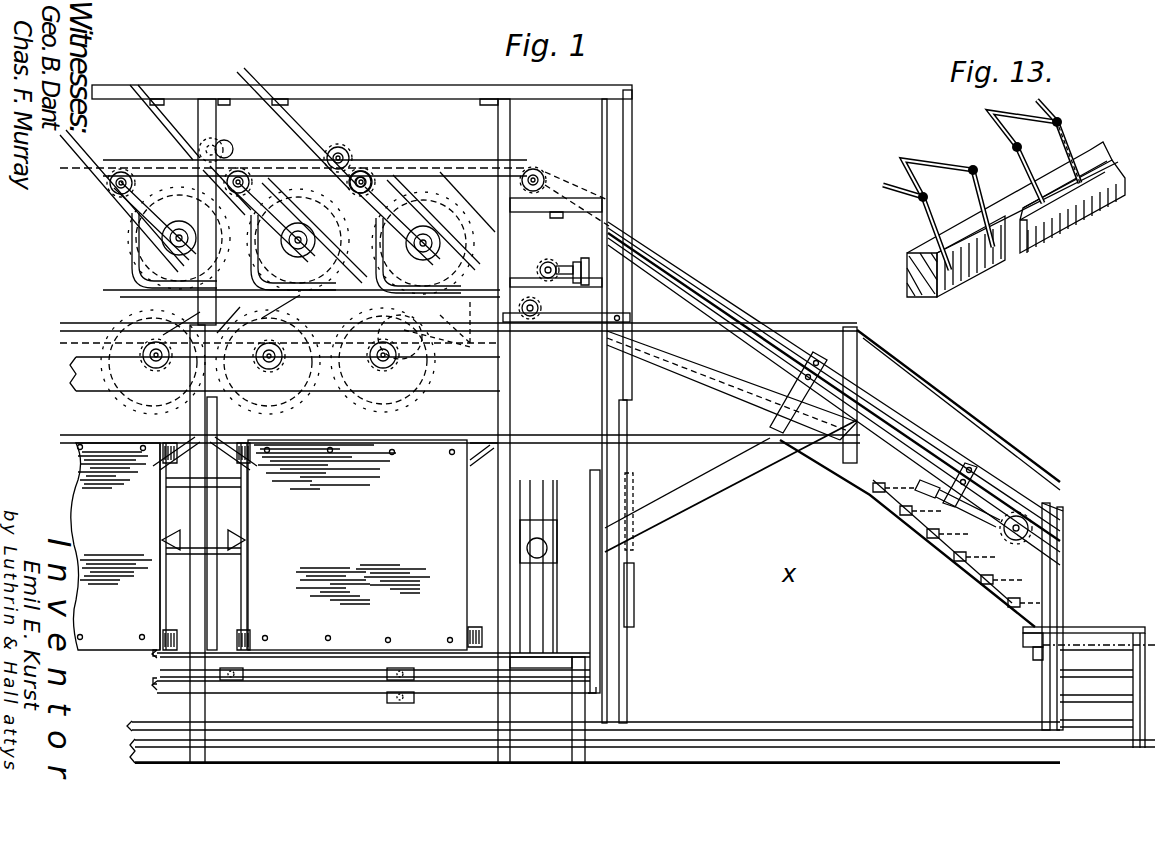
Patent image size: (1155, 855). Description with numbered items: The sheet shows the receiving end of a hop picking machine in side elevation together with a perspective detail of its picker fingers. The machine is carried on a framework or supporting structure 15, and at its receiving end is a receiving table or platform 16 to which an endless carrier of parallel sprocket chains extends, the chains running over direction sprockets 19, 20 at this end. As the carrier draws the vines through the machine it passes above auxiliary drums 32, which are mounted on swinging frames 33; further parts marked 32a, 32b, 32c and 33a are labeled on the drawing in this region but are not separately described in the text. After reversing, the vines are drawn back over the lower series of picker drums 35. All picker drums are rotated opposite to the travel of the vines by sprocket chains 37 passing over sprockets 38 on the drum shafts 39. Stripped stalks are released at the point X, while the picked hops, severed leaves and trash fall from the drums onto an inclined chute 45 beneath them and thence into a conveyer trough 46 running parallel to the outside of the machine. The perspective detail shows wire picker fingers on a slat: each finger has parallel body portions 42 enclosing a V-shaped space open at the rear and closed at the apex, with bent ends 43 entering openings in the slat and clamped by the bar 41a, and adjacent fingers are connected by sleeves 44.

In FIG. 1, the framework or supporting structure 15 is at (518, 407).
In FIG. 1, the receiving table or platform 16 is at (1087, 626).
In FIG. 1, the direction sprocket 19 is at (1024, 516).
In FIG. 1, the direction sprocket 20 is at (536, 174).
In FIG. 1, the auxiliary drum 32 is at (172, 215).
In FIG. 1, the pulley 32a is at (540, 270).
In FIG. 1, the sprocket 32b is at (370, 178).
In FIG. 1, the sprocket 32c is at (345, 152).
In FIG. 1, the swinging frame 33 is at (305, 140).
In FIG. 1, the inclined arm 33a is at (292, 182).
In FIG. 1, the lower series of picker drums 35 is at (302, 395).
In FIG. 1, the sprocket chain 37 is at (459, 330).
In FIG. 1, the sprocket 38 is at (400, 375).
In FIG. 1, the drum shaft 39 is at (288, 362).
In FIG. 1, the inclined chute 45 is at (284, 543).
In FIG. 1, the conveyer trough 46 is at (150, 667).
In FIG. 13, the bar 41a is at (1095, 210).
In FIG. 13, the parallel body portions 42 is at (1072, 138).
In FIG. 13, the bent ends 43 is at (945, 145).
In FIG. 13, the sleeve 44 is at (915, 207).